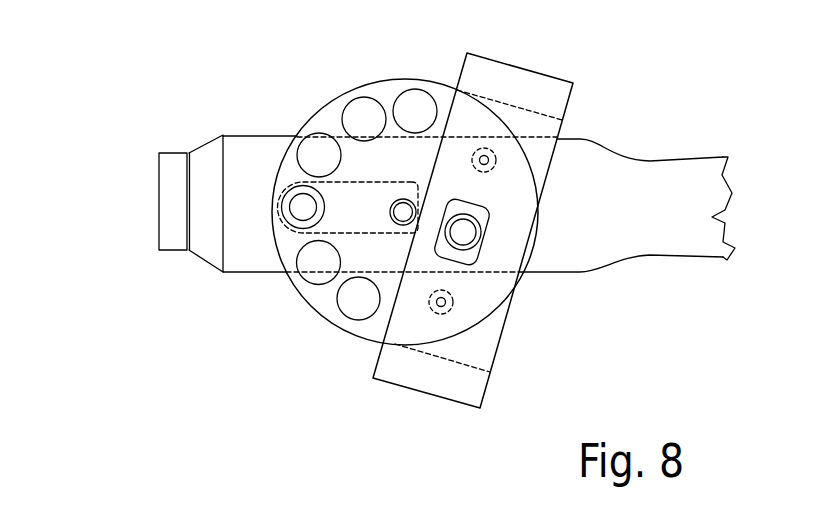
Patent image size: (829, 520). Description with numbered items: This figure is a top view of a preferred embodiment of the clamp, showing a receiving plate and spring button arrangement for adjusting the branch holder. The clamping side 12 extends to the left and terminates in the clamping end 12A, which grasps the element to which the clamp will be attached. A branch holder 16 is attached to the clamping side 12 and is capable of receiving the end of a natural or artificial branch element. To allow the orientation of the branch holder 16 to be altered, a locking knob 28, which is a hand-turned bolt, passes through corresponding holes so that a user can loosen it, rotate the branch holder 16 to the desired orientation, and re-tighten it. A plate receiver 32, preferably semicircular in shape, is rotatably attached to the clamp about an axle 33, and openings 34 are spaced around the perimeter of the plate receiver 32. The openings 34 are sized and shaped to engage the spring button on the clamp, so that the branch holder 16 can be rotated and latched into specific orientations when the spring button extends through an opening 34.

The clamping side 12 is at (600, 165).
The clamping end 12A is at (158, 197).
The branch holder 16 is at (483, 332).
The locking knob 28 is at (302, 205).
The plate receiver 32 is at (363, 338).
The axle 33 is at (398, 201).
The opening 34 is at (352, 297).